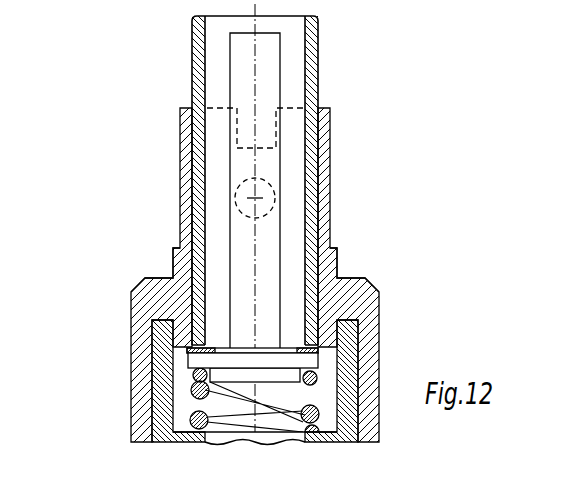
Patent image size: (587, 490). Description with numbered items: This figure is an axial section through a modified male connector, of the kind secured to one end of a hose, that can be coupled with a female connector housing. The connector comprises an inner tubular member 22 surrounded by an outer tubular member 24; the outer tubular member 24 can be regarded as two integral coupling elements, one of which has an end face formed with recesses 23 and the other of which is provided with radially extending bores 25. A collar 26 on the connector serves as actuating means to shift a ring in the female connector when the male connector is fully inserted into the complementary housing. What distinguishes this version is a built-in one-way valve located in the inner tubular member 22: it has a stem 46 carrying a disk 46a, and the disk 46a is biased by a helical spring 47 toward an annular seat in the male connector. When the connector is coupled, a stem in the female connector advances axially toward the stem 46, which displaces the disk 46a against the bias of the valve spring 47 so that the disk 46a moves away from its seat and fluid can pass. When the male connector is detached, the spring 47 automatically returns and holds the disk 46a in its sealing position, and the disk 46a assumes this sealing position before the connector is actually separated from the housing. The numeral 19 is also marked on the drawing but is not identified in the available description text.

The housing 19 is at (74, 0).
The inner tubular member 22 is at (198, 87).
The recesses 23 is at (246, 120).
The outer tubular member 24 is at (181, 229).
The radially extending bores 25 is at (248, 189).
The collar 26 is at (173, 264).
The stem 46 is at (245, 345).
The disk 46a is at (313, 364).
The helical spring 47 is at (230, 423).